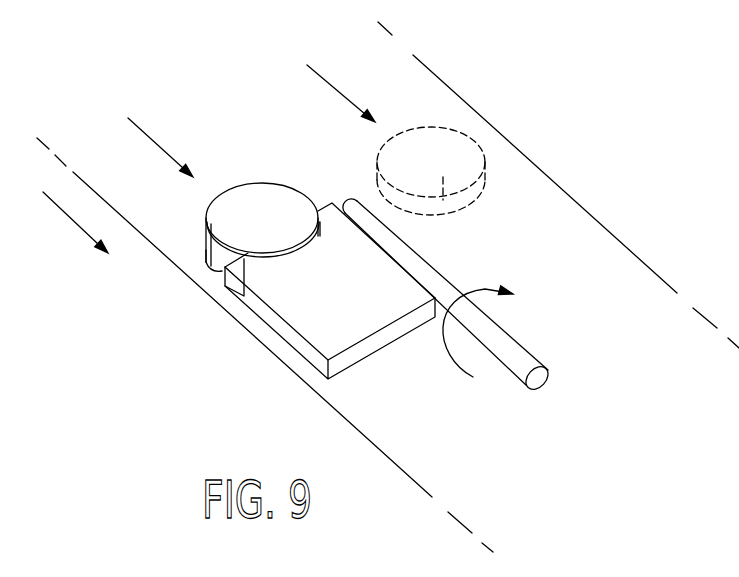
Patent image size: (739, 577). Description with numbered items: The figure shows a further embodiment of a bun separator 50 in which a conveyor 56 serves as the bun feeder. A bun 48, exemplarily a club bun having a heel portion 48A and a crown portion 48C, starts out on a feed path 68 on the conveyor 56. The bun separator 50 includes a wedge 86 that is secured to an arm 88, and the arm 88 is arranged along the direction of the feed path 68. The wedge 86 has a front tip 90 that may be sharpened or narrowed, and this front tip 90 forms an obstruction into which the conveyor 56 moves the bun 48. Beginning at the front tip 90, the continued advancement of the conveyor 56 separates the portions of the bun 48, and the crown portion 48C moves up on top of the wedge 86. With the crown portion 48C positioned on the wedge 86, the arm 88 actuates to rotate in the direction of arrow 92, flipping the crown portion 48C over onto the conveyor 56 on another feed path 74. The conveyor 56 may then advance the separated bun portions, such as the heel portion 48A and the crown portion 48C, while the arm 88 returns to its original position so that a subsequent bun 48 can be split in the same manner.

The bun 48 is at (254, 206).
The heel portion 48A is at (217, 266).
The crown portion 48C is at (282, 215).
The bun separator 50 is at (576, 154).
The conveyor 56 is at (423, 88).
The feed path 68 is at (157, 146).
The another feed path 74 is at (322, 77).
The wedge 86 is at (350, 306).
The arm 88 is at (517, 357).
The front tip 90 is at (243, 282).
The arrow 92 is at (446, 343).